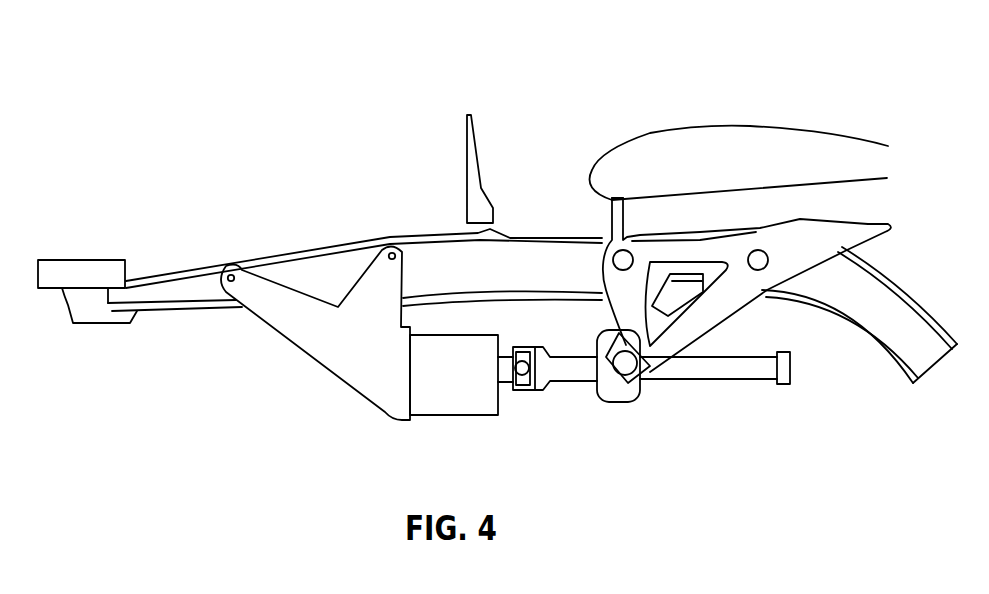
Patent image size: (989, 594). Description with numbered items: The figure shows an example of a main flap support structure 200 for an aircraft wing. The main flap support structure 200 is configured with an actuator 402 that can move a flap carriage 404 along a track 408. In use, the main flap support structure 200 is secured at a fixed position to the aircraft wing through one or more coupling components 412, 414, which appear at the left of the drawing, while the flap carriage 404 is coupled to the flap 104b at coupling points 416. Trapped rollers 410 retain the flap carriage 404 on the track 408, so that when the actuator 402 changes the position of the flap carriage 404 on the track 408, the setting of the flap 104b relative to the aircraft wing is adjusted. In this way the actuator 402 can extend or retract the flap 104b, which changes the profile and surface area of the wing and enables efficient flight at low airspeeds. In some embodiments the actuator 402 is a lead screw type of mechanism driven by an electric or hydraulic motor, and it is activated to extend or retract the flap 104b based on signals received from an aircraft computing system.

The main flap support structure 200 is at (641, 58).
The flap 104b is at (730, 125).
The actuator 402 is at (566, 410).
The flap carriage 404 is at (720, 302).
The track 408 is at (880, 307).
The trapped rollers 410 is at (616, 256).
The coupling component 412 is at (99, 276).
The coupling component 414 is at (473, 145).
The coupling points 416 is at (613, 198).